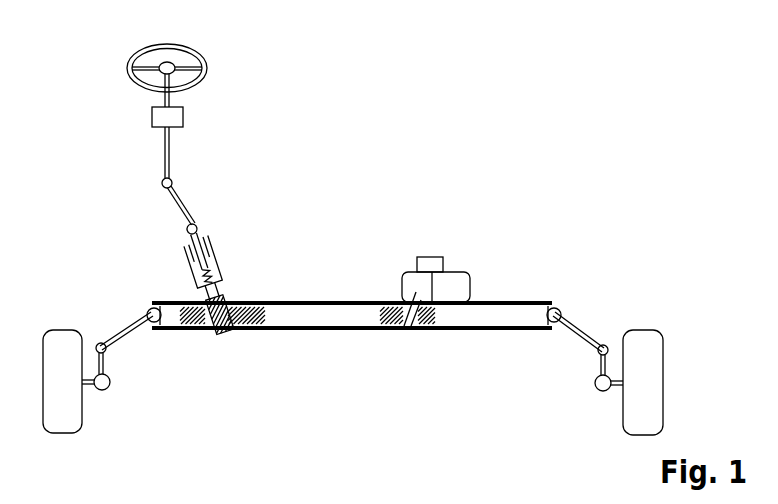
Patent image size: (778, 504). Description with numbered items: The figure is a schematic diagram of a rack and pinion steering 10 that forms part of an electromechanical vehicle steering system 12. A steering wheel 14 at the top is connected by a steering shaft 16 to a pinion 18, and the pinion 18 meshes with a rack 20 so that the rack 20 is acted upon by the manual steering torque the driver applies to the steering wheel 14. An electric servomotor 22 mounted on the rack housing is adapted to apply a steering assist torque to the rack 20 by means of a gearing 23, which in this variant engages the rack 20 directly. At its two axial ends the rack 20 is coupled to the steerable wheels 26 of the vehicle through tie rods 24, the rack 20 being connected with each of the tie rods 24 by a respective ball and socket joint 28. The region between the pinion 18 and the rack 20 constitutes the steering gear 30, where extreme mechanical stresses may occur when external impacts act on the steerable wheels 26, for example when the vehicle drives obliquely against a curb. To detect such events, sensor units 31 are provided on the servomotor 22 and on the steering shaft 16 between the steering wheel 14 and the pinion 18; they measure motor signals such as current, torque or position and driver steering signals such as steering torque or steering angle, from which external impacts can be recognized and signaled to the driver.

The rack and pinion steering 10 is at (483, 85).
The electromechanical vehicle steering system 12 is at (483, 85).
The steering wheel 14 is at (207, 66).
The steering shaft 16 is at (171, 168).
The pinion 18 is at (223, 334).
The rack 20 is at (324, 310).
The electric servomotor 22 is at (456, 272).
The gearing 23 is at (410, 272).
The tie rods 24 is at (130, 335).
The steerable wheels 26 is at (62, 330).
The ball and socket joint 28 is at (147, 306).
The steering gear 30 is at (248, 275).
The sensor units 31 is at (183, 117).